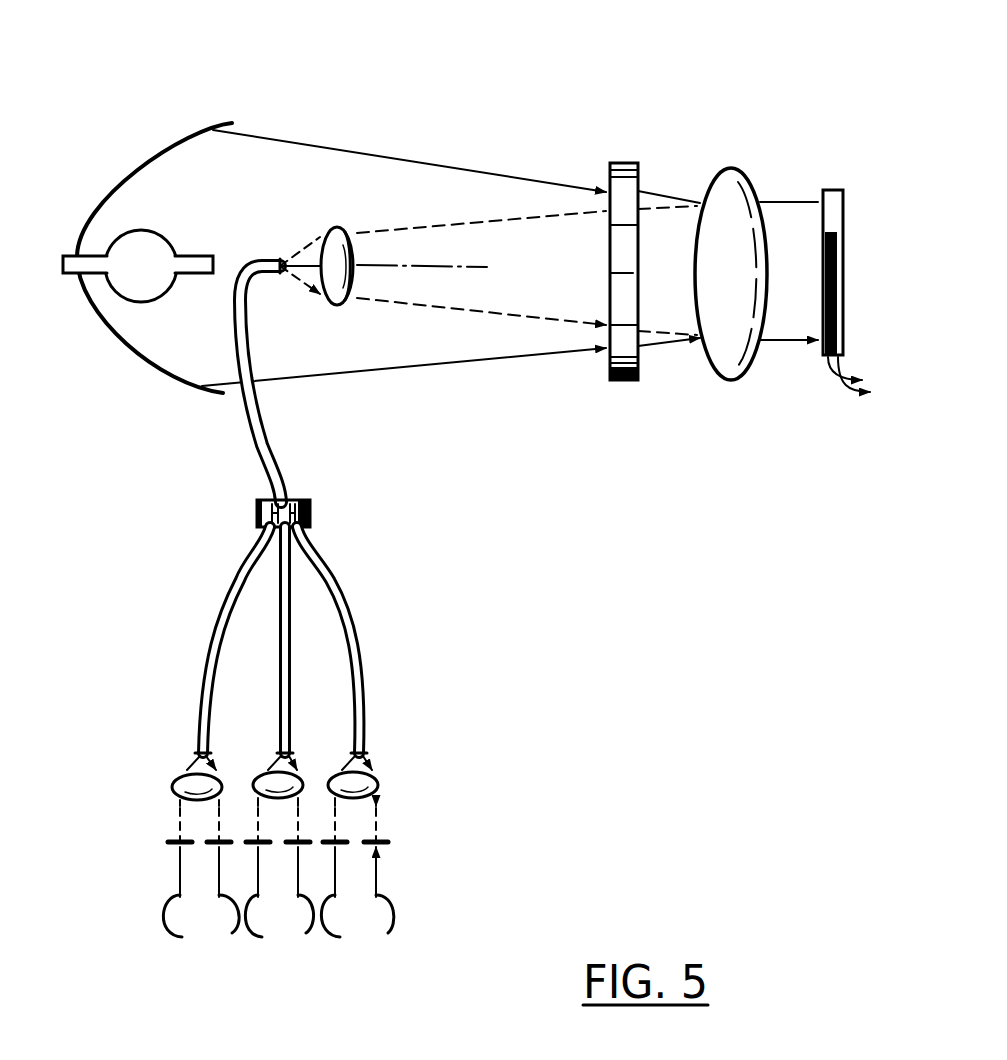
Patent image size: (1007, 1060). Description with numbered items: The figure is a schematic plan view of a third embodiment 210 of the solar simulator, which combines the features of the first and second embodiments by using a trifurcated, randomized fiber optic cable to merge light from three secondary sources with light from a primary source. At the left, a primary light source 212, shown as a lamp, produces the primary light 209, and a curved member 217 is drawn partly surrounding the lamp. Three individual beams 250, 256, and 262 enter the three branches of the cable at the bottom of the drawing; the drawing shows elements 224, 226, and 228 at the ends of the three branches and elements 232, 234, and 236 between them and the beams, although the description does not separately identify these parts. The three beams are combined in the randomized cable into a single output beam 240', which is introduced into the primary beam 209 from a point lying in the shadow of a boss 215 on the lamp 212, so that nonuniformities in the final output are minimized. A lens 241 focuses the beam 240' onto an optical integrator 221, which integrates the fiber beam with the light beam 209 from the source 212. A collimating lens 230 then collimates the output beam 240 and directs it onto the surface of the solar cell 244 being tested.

The third embodiment 210 is at (222, 50).
The parabolic reflector 217 is at (132, 170).
The primary light source 212 is at (136, 288).
The boss 215 is at (189, 256).
The light 209 is at (498, 360).
The output beam from cable 240' is at (280, 369).
The lens 241 is at (355, 247).
The optical integrator 221 is at (620, 163).
The collimating lens 230 is at (733, 168).
The output beam 240 is at (779, 369).
The solar cell 244 is at (832, 190).
The center fiber branch lens 224 is at (260, 762).
The left fiber branch lens 226 is at (176, 776).
The right fiber branch lens 228 is at (380, 780).
The filter 232 is at (170, 840).
The filter 234 is at (262, 840).
The filter 236 is at (380, 840).
The individual beam 250 is at (201, 922).
The individual beam 256 is at (279, 922).
The individual beam 262 is at (358, 922).